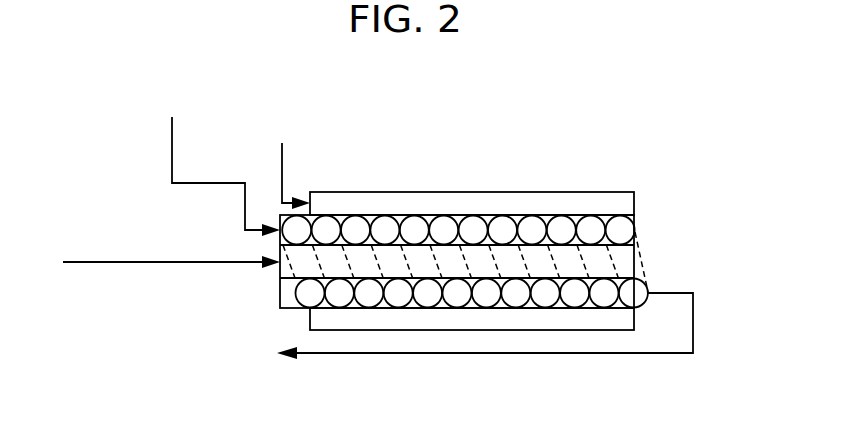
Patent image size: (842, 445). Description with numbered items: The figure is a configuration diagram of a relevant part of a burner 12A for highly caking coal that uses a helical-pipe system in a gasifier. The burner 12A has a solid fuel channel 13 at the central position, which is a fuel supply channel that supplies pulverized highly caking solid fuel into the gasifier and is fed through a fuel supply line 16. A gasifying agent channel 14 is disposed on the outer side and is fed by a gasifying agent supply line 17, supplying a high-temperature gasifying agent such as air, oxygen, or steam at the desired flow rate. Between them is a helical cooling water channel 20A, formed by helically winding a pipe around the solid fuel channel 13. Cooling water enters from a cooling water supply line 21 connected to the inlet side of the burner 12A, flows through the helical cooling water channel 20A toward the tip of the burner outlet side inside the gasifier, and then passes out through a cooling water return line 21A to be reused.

The burner 12A is at (605, 183).
The solid fuel channel 13 is at (625, 262).
The gasifying agent channel 14 is at (518, 198).
The fuel supply line 16 is at (78, 263).
The gasifying agent supply line 17 is at (283, 162).
The helical cooling water channel 20A is at (413, 226).
The cooling water supply line 21 is at (172, 145).
The cooling water return line 21A is at (342, 355).